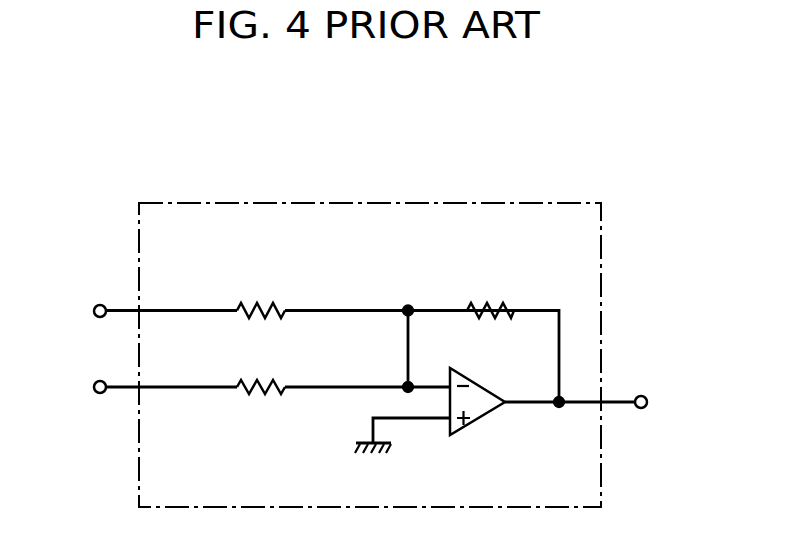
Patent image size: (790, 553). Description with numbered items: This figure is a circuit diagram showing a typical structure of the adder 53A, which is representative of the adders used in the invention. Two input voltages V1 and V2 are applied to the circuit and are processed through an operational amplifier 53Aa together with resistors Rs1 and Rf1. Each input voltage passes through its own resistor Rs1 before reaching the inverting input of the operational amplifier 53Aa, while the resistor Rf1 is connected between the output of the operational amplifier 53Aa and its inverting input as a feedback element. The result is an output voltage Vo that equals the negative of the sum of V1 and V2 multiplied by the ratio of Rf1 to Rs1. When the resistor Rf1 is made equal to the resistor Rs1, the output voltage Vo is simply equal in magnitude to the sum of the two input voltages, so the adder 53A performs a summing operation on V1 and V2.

The adder 53A is at (364, 202).
The operational amplifier 53Aa is at (478, 420).
The resistor Rs1 is at (258, 303).
The resistor Rf1 is at (486, 303).
The input voltage V1 is at (147, 312).
The input voltage V2 is at (147, 389).
The voltage Vo is at (595, 403).